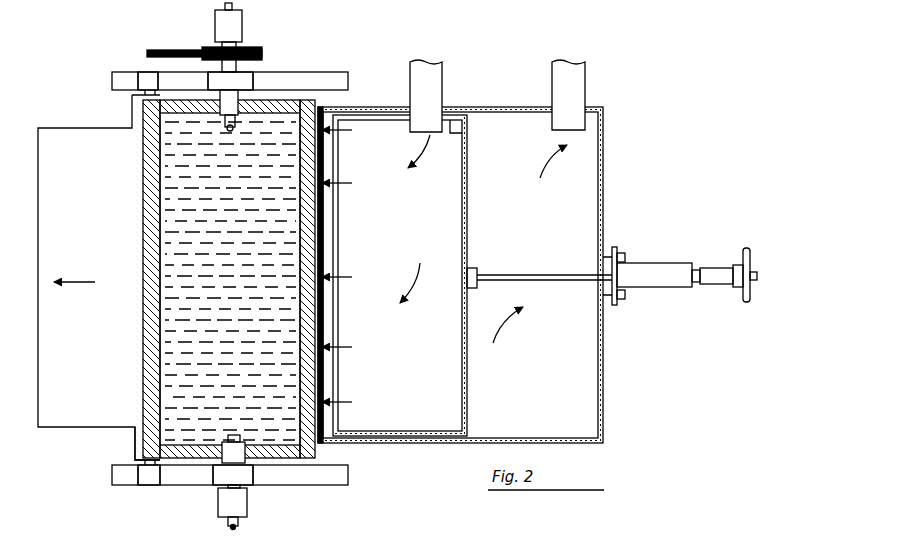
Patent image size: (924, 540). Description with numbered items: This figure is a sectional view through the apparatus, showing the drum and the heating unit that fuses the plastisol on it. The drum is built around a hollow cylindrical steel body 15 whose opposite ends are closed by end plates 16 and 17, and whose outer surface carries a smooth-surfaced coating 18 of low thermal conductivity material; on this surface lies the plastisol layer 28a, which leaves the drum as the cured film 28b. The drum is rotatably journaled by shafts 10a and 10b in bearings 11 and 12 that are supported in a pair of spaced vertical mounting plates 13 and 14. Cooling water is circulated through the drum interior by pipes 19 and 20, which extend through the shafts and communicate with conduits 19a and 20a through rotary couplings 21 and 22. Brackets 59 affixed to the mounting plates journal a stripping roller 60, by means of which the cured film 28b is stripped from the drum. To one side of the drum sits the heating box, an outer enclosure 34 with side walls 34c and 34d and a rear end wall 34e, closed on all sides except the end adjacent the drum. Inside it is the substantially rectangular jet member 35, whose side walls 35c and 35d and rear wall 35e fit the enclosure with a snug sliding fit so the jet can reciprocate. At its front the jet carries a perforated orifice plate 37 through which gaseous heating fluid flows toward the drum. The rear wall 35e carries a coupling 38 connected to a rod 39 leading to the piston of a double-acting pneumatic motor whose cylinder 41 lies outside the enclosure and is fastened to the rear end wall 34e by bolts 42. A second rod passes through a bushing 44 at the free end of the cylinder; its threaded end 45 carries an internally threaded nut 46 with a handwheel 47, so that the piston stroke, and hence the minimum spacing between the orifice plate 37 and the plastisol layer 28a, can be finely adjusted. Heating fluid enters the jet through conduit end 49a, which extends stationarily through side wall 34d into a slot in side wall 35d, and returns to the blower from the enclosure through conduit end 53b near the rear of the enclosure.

The shaft 10a is at (245, 457).
The shaft 10b is at (248, 86).
The bearing 11 is at (247, 480).
The bearing 12 is at (240, 78).
The mounting plate 13 is at (320, 482).
The mounting plate 14 is at (313, 72).
The cylindrical steel body 15 is at (152, 325).
The end plate 16 is at (175, 457).
The end plate 17 is at (177, 107).
The smooth-surfaced coating 18 is at (148, 215).
The pipe 19 is at (228, 442).
The conduit 19a is at (238, 526).
The pipe 20 is at (226, 127).
The conduit 20a is at (232, 5).
The rotary coupling 21 is at (218, 505).
The rotary coupling 22 is at (215, 22).
The plastisol layer 28a is at (318, 222).
The cured film 28b is at (72, 423).
The outer enclosure 34 is at (598, 408).
The side wall 34c is at (473, 445).
The side wall 34d is at (495, 107).
The rear end wall 34e is at (604, 160).
The jet member 35 is at (468, 398).
The side wall 35c is at (400, 432).
The side wall 35d is at (468, 134).
The rear wall 35e is at (466, 212).
The perforated orifice plate 37 is at (392, 222).
The coupling 38 is at (517, 244).
The rod 39 is at (565, 275).
The cylinder 41 is at (665, 266).
The bolt 42 is at (606, 300).
The bushing 44 is at (712, 284).
The threaded end 45 is at (754, 272).
The nut 46 is at (736, 267).
The handwheel 47 is at (746, 304).
The conduit end 49a is at (413, 123).
The conduit end 53b is at (586, 88).
The bracket 59 is at (146, 76).
The stripping roller 60 is at (135, 447).